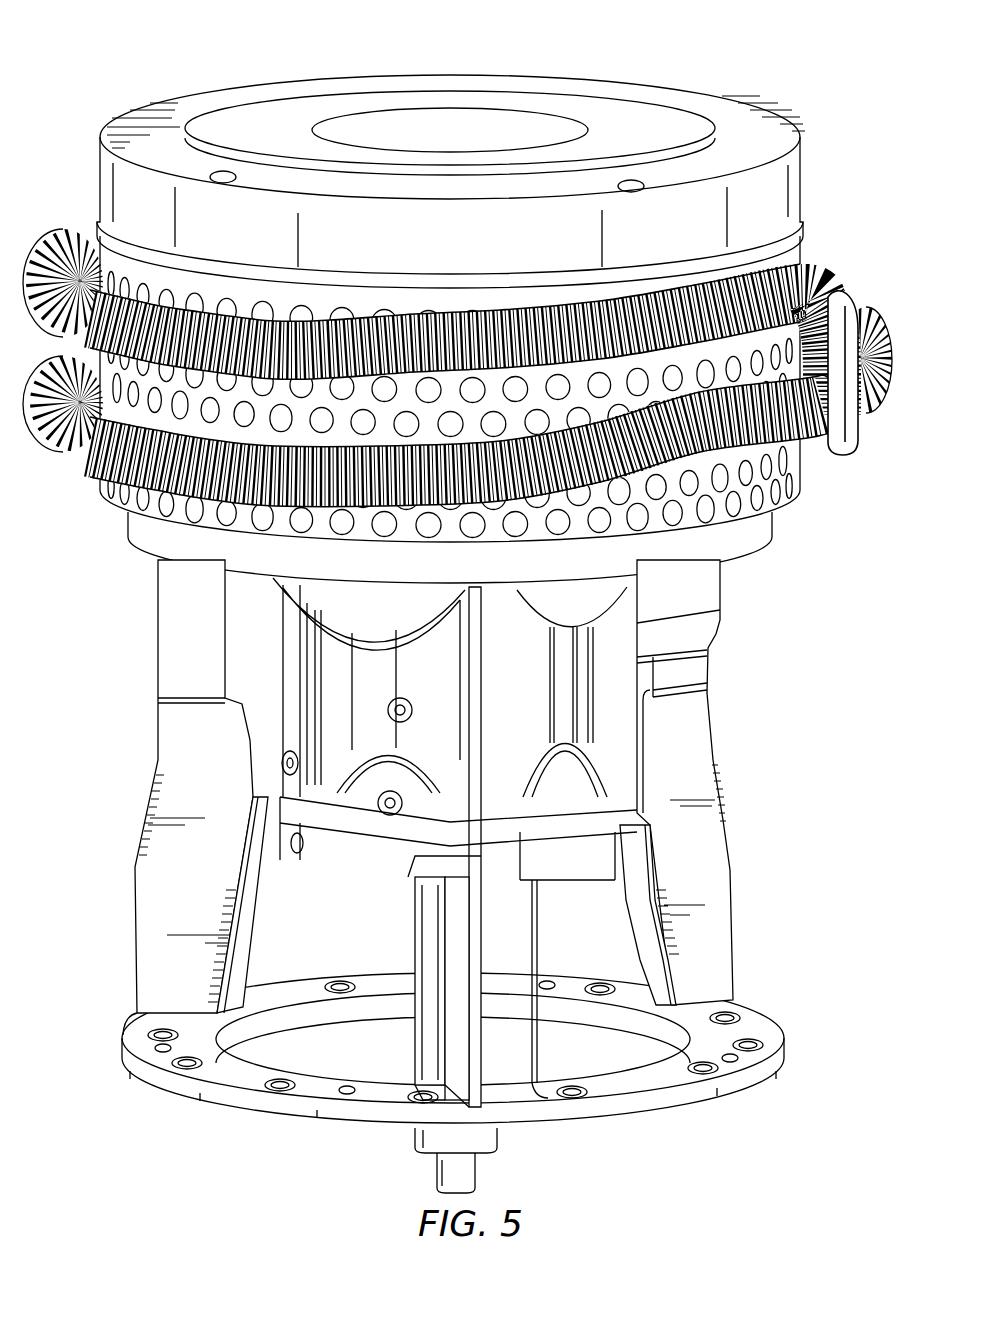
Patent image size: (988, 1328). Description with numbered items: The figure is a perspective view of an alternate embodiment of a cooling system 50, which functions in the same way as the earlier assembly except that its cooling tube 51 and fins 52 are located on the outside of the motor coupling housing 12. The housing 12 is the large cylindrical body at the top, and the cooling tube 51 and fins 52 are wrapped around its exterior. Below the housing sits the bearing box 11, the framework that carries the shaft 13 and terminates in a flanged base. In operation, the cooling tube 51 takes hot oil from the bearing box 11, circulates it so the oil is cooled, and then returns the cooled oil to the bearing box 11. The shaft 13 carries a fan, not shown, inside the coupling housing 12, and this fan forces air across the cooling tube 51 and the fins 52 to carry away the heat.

The cooling system 50 is at (147, 24).
The motor coupling housing 12 is at (803, 177).
The fins 52 is at (818, 258).
The cooling tube 51 is at (862, 441).
The bearing box 11 is at (735, 862).
The shaft 13 is at (417, 1050).